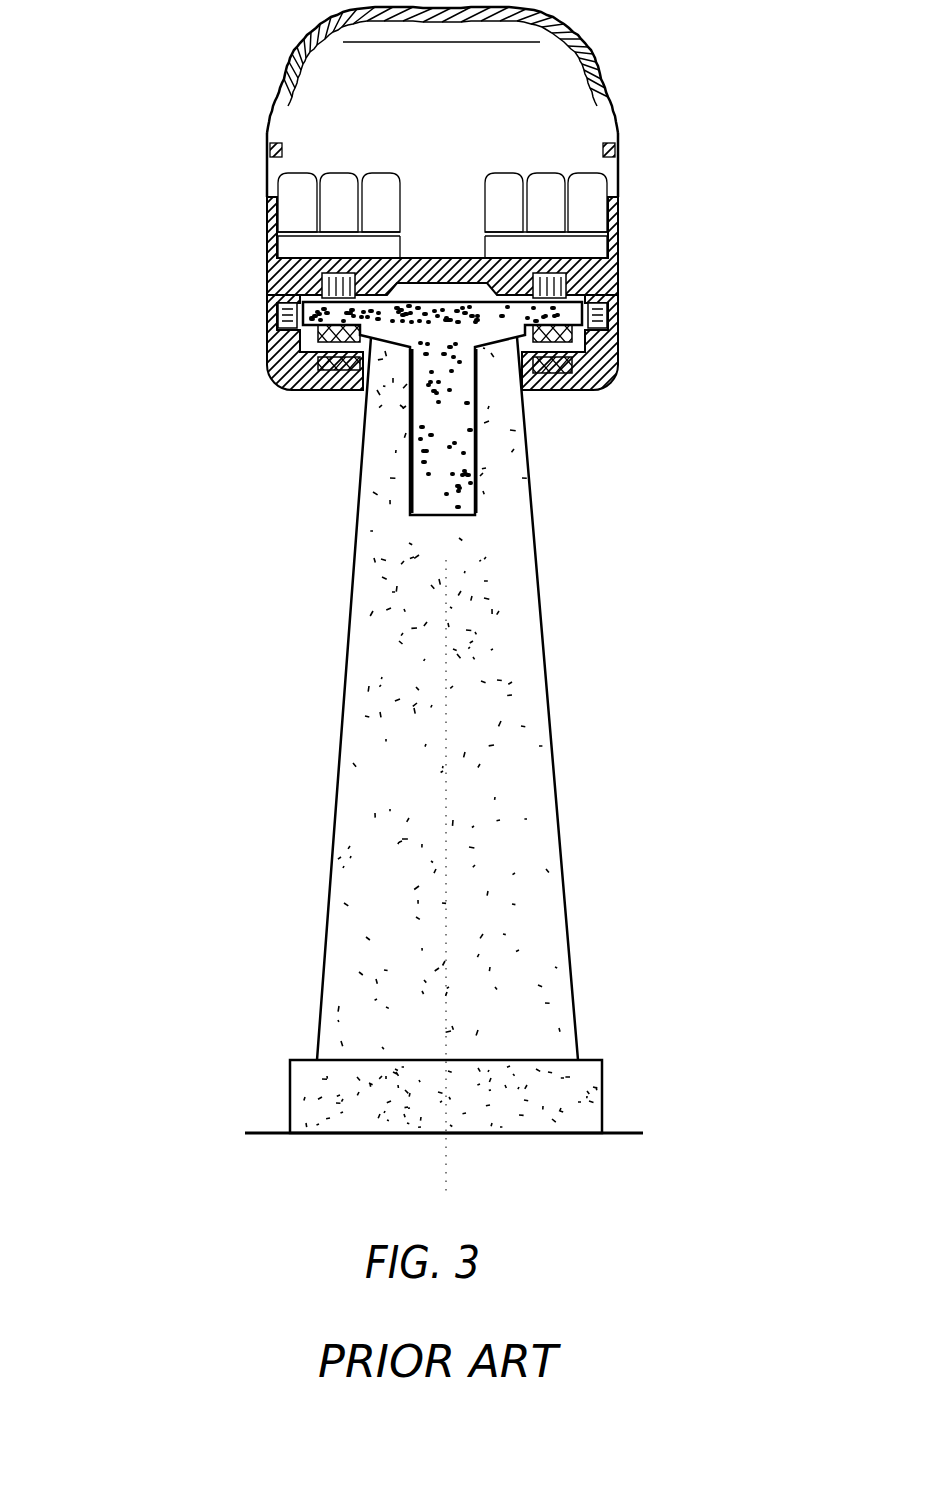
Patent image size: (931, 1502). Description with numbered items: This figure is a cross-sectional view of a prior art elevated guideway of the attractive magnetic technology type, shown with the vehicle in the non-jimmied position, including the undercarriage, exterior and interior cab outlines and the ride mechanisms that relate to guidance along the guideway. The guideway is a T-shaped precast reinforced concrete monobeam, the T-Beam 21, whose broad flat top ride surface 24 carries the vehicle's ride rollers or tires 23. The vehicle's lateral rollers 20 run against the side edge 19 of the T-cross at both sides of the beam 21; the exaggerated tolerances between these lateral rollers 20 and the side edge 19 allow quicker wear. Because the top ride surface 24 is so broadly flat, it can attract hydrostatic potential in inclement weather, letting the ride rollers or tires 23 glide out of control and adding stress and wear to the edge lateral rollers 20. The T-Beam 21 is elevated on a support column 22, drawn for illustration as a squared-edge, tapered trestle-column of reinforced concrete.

The side edge 19 is at (597, 292).
The lateral rollers 20 is at (612, 308).
The T-shaped precast reinforced concrete monobeam guideway 21 is at (447, 432).
The support column 22 is at (500, 712).
The ride rollers or tires 23 is at (270, 270).
The top ride surface 24 is at (433, 302).